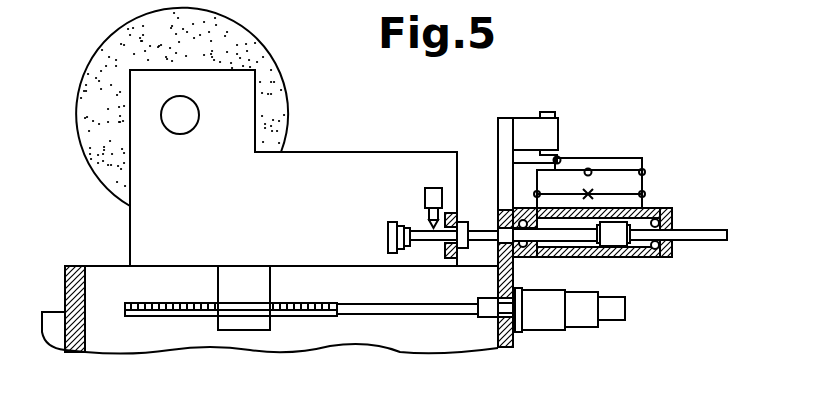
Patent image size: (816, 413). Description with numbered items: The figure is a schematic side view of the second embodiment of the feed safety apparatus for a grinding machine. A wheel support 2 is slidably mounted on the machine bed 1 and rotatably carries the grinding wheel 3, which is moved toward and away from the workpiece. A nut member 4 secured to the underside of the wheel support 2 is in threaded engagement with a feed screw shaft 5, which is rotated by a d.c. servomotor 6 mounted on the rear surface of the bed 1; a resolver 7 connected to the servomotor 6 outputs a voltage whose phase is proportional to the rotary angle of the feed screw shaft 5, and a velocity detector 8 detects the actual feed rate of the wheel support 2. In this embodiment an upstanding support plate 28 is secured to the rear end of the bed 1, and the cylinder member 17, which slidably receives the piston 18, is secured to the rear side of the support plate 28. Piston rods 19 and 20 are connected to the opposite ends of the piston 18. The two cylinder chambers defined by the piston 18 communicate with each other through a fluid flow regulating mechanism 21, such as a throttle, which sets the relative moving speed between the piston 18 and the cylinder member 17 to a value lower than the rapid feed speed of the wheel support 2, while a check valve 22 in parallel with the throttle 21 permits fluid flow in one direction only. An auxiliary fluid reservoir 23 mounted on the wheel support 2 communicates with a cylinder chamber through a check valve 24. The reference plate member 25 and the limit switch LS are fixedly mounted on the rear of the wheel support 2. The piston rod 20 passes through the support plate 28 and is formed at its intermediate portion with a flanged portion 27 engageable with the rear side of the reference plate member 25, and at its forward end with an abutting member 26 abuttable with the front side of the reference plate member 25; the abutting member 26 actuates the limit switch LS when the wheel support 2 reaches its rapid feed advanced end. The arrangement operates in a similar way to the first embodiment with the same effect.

The machine bed 1 is at (66, 280).
The wheel support 2 is at (130, 228).
The grinding wheel 3 is at (257, 37).
The nut member 4 is at (242, 330).
The feed screw shaft 5 is at (361, 316).
The d.c. servomotor 6 is at (545, 331).
The resolver 7 is at (585, 328).
The velocity detector 8 is at (615, 321).
The cylinder member 17 is at (663, 210).
The piston 18 is at (621, 247).
The piston rod 19 is at (702, 241).
The piston rod 20 is at (567, 242).
The fluid flow regulating mechanism 21 is at (593, 192).
The check valve 22 is at (590, 170).
The auxiliary fluid reservoir 23 is at (525, 125).
The check valve 24 is at (559, 158).
The reference plate member 25 is at (447, 256).
The abutting member 26 is at (390, 230).
The flanged portion 27 is at (463, 222).
The support plate 28 is at (498, 150).
The limit switch LS is at (428, 190).